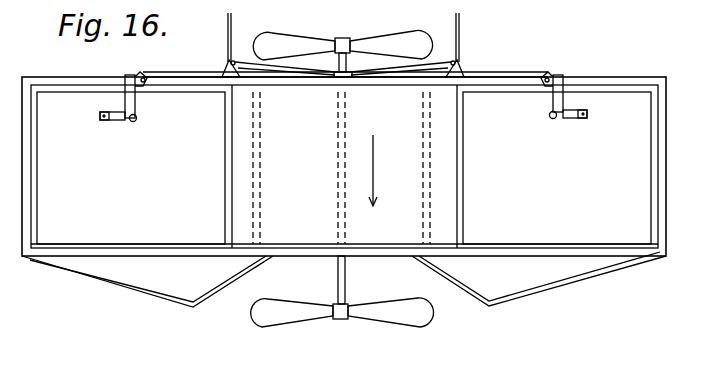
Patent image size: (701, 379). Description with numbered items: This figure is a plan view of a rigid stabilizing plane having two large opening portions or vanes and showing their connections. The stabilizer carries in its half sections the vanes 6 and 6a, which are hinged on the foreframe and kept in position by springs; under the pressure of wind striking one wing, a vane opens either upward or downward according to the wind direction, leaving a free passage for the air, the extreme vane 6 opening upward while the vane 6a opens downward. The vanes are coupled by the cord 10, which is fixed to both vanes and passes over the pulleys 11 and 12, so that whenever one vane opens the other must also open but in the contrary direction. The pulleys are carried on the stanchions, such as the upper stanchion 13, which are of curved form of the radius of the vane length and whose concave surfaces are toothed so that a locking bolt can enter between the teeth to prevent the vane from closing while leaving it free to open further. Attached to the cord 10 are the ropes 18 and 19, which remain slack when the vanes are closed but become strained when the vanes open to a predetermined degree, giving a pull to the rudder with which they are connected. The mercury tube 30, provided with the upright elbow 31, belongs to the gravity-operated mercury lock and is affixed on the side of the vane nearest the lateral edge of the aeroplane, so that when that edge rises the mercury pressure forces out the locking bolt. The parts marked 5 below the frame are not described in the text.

The inclined bottom panel 5 is at (148, 282).
The vane 6 is at (131, 168).
The vane 6a is at (557, 168).
The cord 10 is at (197, 84).
The pulley 11 is at (137, 120).
The pulley 12 is at (549, 118).
The upper stanchion 13 is at (122, 98).
The rope 18 is at (232, 45).
The rope 19 is at (466, 30).
The mercury tube 30 is at (113, 121).
The elbow 31 is at (603, 113).